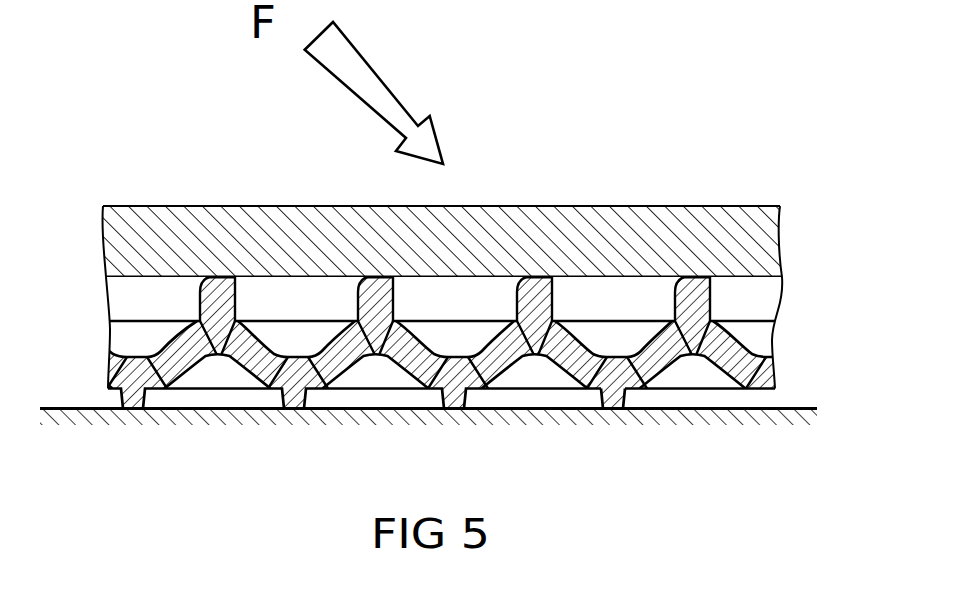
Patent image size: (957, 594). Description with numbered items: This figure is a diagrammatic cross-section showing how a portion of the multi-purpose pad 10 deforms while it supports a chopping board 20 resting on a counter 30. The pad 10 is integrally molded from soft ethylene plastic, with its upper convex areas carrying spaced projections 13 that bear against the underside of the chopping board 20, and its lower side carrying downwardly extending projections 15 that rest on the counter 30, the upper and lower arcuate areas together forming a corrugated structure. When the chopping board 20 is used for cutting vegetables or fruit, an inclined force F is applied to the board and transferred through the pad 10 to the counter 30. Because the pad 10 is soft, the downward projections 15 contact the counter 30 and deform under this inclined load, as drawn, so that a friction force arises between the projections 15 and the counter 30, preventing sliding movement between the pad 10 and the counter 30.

The multi-purpose pad 10 is at (100, 318).
The projections 13 is at (697, 297).
The downwardly extending projections 15 is at (617, 410).
The chopping board 20 is at (655, 228).
The counter 30 is at (203, 416).